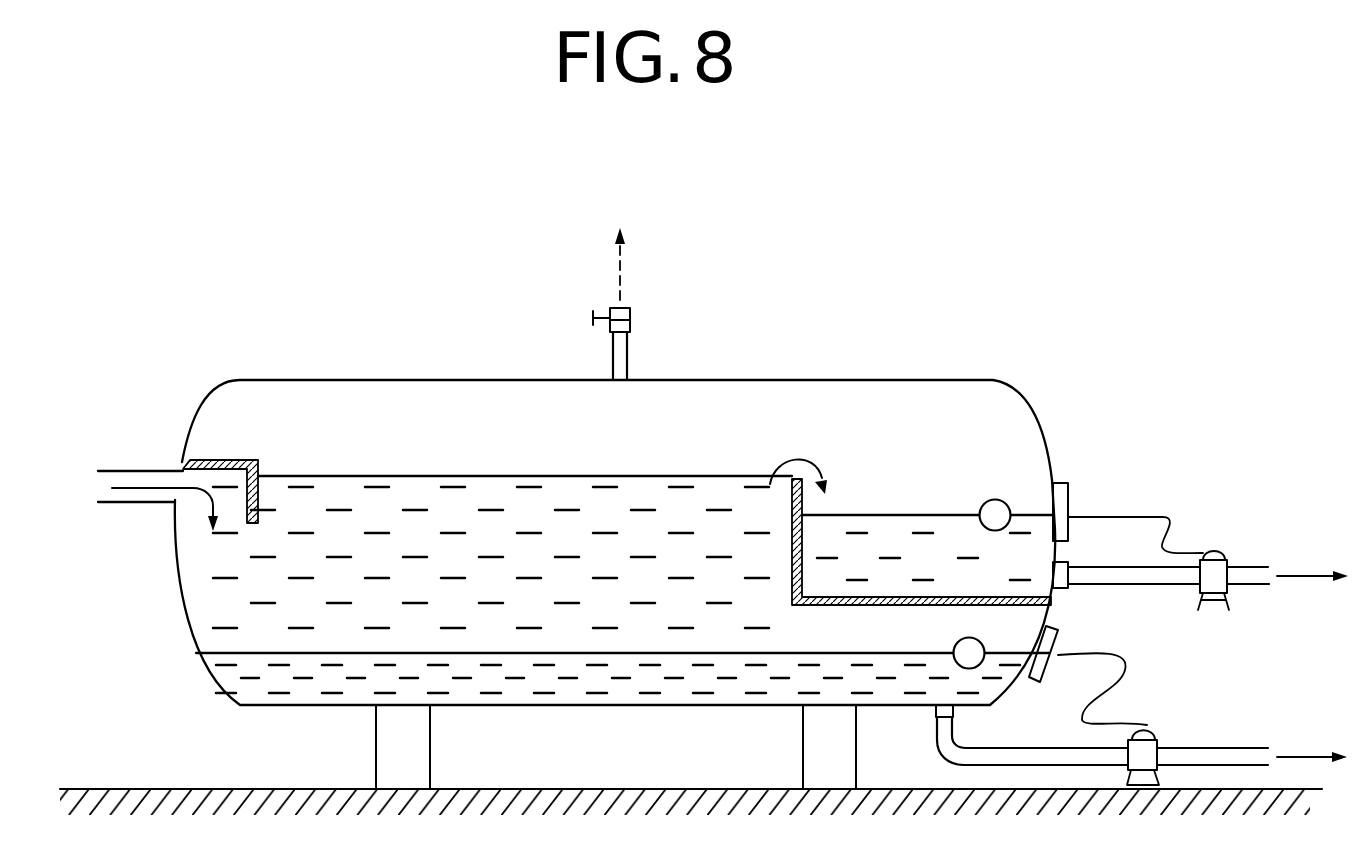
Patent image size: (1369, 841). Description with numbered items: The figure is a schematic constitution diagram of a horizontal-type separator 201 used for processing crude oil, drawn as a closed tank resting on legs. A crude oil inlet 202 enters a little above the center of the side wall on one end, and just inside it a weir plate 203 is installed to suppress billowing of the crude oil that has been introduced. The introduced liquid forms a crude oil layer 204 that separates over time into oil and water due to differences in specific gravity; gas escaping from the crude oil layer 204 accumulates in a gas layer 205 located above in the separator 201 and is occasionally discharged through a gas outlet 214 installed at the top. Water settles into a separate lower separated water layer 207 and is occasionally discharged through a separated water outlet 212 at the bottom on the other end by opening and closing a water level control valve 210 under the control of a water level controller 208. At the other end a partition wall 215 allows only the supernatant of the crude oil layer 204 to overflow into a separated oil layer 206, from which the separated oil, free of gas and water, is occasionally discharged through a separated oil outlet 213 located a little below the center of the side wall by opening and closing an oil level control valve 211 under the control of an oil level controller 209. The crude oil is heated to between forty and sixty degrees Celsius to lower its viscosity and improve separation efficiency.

The separator 201 is at (411, 356).
The crude oil inlet 202 is at (107, 470).
The weir plate 203 is at (260, 493).
The crude oil layer 204 is at (221, 601).
The gas layer 205 is at (745, 415).
The separated oil layer 206 is at (943, 530).
The separated water layer 207 is at (260, 690).
The water level controller 208 is at (1060, 632).
The oil level controller 209 is at (1068, 498).
The water level control valve 210 is at (1150, 727).
The oil level control valve 211 is at (1220, 549).
The separated water outlet 212 is at (1267, 753).
The separated oil outlet 213 is at (1267, 577).
The gas outlet 214 is at (628, 348).
The partition wall 215 is at (803, 543).